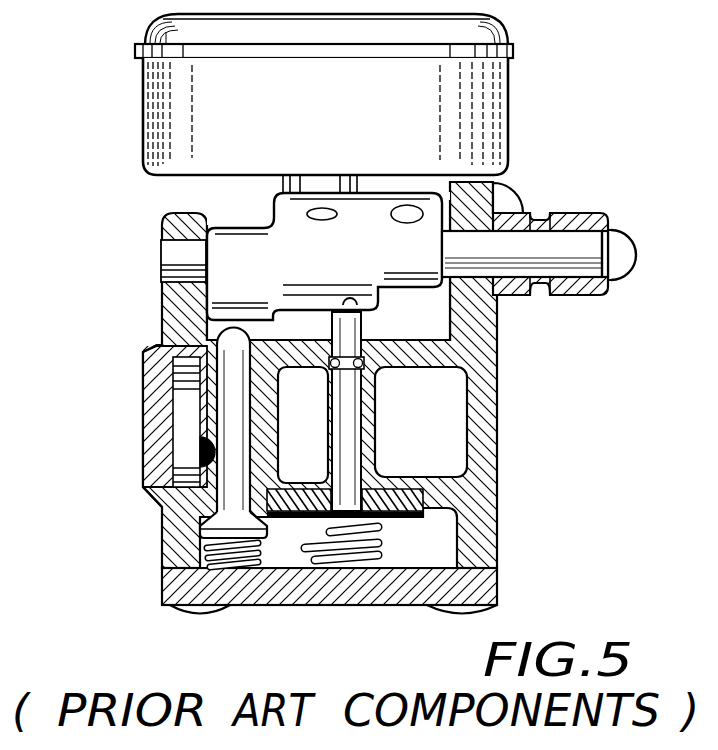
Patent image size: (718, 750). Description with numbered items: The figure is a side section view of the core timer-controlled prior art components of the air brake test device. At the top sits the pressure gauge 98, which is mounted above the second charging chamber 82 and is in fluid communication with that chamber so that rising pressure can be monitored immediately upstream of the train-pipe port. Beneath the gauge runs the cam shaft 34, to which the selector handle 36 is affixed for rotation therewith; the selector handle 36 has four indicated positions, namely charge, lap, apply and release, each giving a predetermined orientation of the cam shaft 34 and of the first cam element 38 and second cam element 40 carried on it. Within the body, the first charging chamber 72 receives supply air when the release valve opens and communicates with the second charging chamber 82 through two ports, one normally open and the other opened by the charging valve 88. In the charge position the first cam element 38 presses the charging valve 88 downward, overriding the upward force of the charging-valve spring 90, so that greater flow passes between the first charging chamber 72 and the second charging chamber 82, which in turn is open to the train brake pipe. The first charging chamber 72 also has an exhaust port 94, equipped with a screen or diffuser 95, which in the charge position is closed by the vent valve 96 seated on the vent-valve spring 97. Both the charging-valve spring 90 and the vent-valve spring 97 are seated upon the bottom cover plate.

The pressure gauge 98 is at (483, 86).
The cam shaft 34 is at (465, 242).
The selector handle 36 is at (575, 220).
The second cam element 40 is at (240, 247).
The first cam element 38 is at (355, 293).
The exhaust port 94 is at (182, 372).
The vent valve 96 is at (230, 414).
The screen or diffuser 95 is at (155, 452).
The charging valve 88 is at (352, 420).
The second charging chamber 82 is at (430, 452).
The first charging chamber 72 is at (437, 533).
The vent-valve spring 97 is at (222, 552).
The charging-valve spring 90 is at (348, 553).